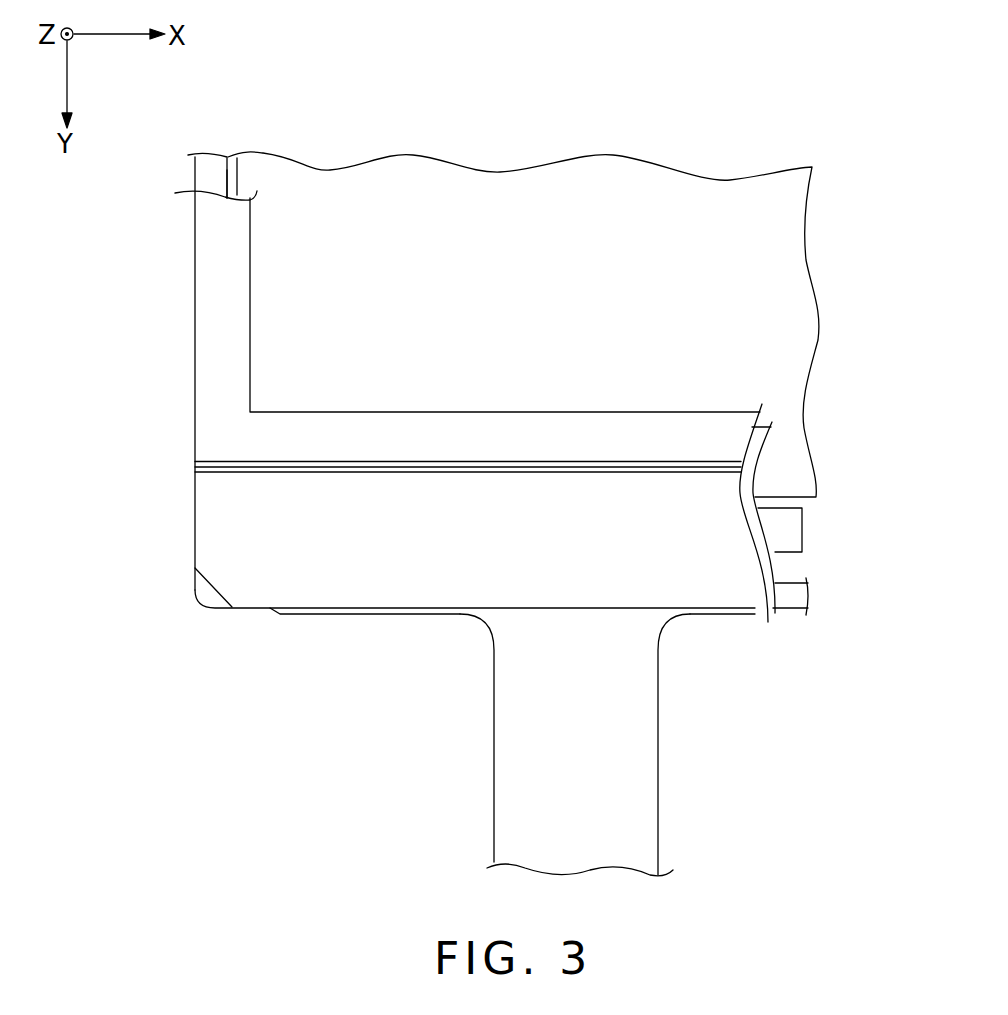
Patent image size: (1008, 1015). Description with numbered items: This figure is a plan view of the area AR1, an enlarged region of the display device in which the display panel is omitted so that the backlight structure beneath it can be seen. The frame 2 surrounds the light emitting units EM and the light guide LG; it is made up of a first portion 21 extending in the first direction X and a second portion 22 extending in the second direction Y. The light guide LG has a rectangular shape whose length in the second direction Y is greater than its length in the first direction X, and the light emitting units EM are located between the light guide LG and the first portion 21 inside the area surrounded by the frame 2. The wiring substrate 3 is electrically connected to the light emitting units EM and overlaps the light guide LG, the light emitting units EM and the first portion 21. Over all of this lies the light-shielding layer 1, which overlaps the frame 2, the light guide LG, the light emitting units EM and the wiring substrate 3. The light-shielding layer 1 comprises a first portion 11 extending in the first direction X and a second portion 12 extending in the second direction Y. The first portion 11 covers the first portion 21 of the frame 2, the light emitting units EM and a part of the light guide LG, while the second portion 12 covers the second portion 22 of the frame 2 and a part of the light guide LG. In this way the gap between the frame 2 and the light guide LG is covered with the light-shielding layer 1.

The light-shielding layer 1 is at (454, 412).
The first portion 11 is at (353, 588).
The second portion 12 is at (215, 318).
The frame 2 is at (195, 169).
The first portion 21 is at (795, 598).
The second portion 22 is at (215, 182).
The wiring substrate 3 is at (642, 698).
The light emitting unit EM is at (788, 530).
The light guide LG is at (800, 333).
The area AR1 is at (342, 88).